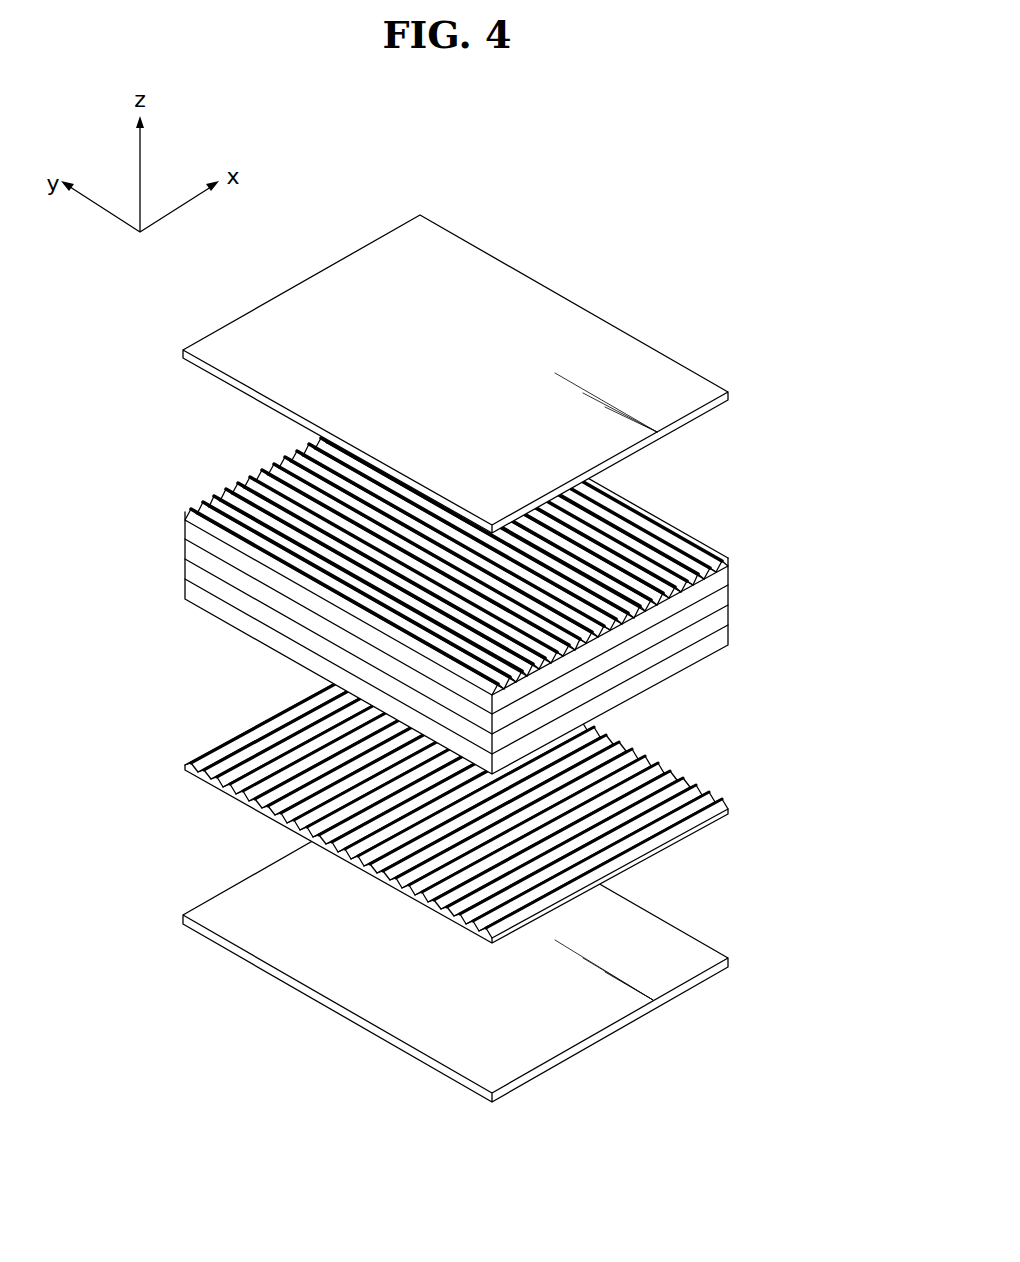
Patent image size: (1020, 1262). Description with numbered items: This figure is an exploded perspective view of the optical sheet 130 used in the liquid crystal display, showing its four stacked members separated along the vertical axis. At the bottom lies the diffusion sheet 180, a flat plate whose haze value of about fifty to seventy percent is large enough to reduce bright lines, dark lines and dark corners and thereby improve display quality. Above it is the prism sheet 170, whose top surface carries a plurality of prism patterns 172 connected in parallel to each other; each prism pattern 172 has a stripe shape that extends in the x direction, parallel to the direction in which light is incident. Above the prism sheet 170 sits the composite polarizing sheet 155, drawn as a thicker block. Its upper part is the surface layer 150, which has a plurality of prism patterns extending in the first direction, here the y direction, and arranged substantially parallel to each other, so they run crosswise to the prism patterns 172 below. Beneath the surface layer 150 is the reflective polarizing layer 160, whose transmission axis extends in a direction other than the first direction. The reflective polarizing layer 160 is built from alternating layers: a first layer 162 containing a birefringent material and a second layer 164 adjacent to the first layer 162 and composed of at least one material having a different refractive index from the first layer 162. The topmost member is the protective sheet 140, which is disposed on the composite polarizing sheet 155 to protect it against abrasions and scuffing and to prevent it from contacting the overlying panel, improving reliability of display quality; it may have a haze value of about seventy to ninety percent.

The optical sheet 130 is at (503, 658).
The protective sheet 140 is at (512, 374).
The surface layer 150 is at (687, 551).
The composite polarizing sheet 155 is at (473, 578).
The reflective polarizing layer 160 is at (444, 643).
The first layer 162 is at (190, 583).
The second layer 164 is at (190, 598).
The prism sheet 170 is at (513, 786).
The prism patterns 172 is at (704, 782).
The diffusion sheet 180 is at (700, 955).